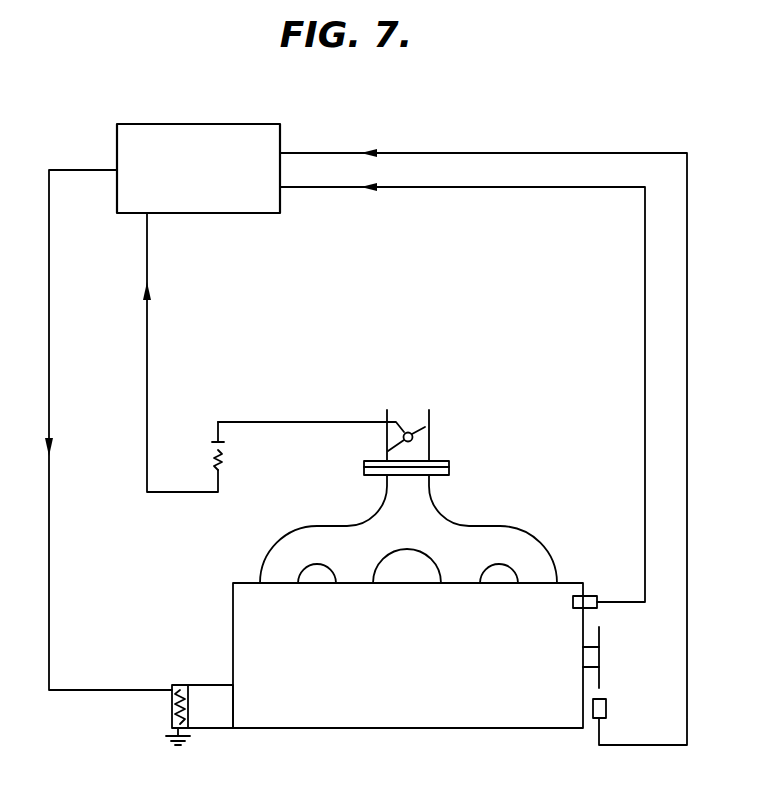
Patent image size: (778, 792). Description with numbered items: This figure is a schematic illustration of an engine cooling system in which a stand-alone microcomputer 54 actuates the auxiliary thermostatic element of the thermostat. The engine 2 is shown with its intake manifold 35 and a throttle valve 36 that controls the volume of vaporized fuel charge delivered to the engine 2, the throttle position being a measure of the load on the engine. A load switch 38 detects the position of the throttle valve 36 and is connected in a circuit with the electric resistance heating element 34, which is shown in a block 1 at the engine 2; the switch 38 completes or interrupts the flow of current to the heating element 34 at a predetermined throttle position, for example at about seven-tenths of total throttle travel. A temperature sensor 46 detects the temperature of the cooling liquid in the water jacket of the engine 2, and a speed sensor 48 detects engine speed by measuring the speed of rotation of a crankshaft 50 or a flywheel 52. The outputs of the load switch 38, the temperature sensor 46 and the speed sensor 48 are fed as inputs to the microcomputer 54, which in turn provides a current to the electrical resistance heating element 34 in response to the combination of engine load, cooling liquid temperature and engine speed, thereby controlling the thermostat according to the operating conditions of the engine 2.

The sensor block 1 is at (212, 692).
The engine 2 is at (239, 605).
The electric resistance heating element 34 is at (172, 711).
The intake manifold 35 is at (497, 535).
The throttle valve 36 is at (407, 432).
The switch 38 is at (212, 450).
The temperature sensor 46 is at (572, 601).
The speed sensor 48 is at (607, 710).
The crankshaft 50 is at (590, 657).
The flywheel 52 is at (600, 632).
The microcomputer 54 is at (235, 208).